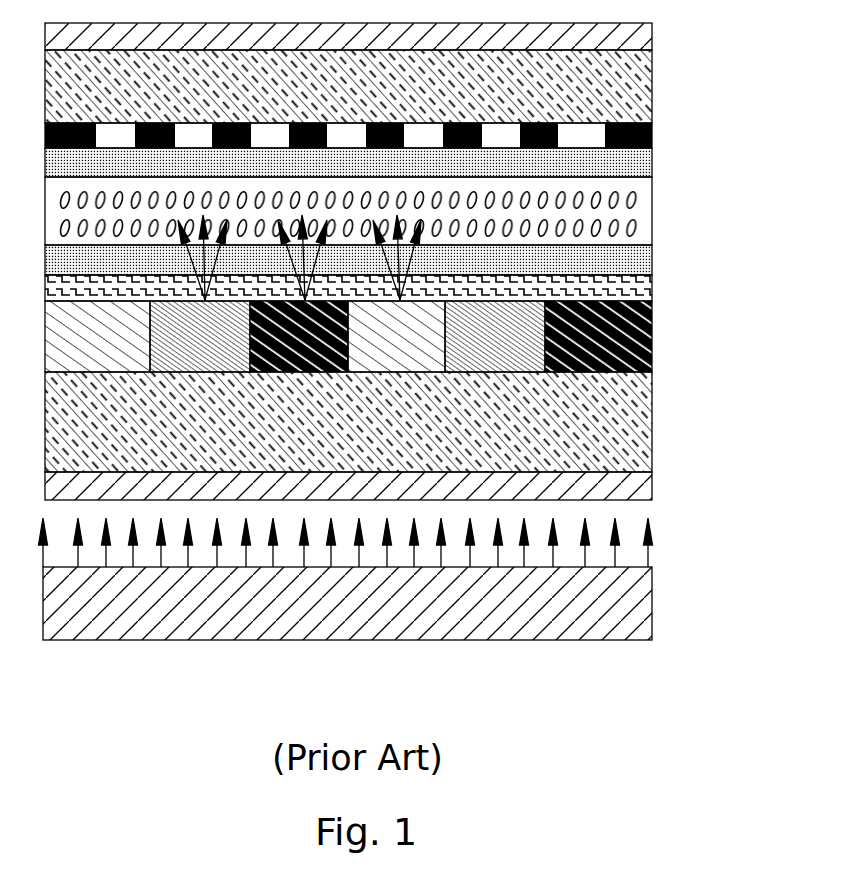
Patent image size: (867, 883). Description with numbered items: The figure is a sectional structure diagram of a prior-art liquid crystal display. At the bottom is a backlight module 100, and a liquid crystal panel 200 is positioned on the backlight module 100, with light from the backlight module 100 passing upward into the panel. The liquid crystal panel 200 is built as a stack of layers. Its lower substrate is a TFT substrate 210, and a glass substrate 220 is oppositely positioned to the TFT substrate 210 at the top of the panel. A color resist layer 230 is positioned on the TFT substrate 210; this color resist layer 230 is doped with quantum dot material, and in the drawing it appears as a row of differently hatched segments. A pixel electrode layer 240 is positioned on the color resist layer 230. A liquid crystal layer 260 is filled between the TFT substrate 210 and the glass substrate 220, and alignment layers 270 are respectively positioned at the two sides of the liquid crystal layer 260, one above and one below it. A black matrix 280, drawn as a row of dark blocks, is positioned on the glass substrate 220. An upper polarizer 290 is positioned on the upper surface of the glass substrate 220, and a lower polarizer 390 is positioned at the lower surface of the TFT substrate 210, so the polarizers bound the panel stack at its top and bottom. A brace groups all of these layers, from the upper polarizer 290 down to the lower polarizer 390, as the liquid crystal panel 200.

The backlight module 100 is at (612, 592).
The liquid crystal panel 200 is at (446, 270).
The TFT substrate 210 is at (597, 422).
The glass substrate 220 is at (603, 78).
The color resist layer 230 is at (607, 327).
The pixel electrode layer 240 is at (600, 288).
The liquid crystal layer 260 is at (603, 197).
The alignment layers 270 is at (600, 160).
The black matrix 280 is at (650, 141).
The upper polarizer 290 is at (603, 33).
The lower polarizer 390 is at (391, 494).